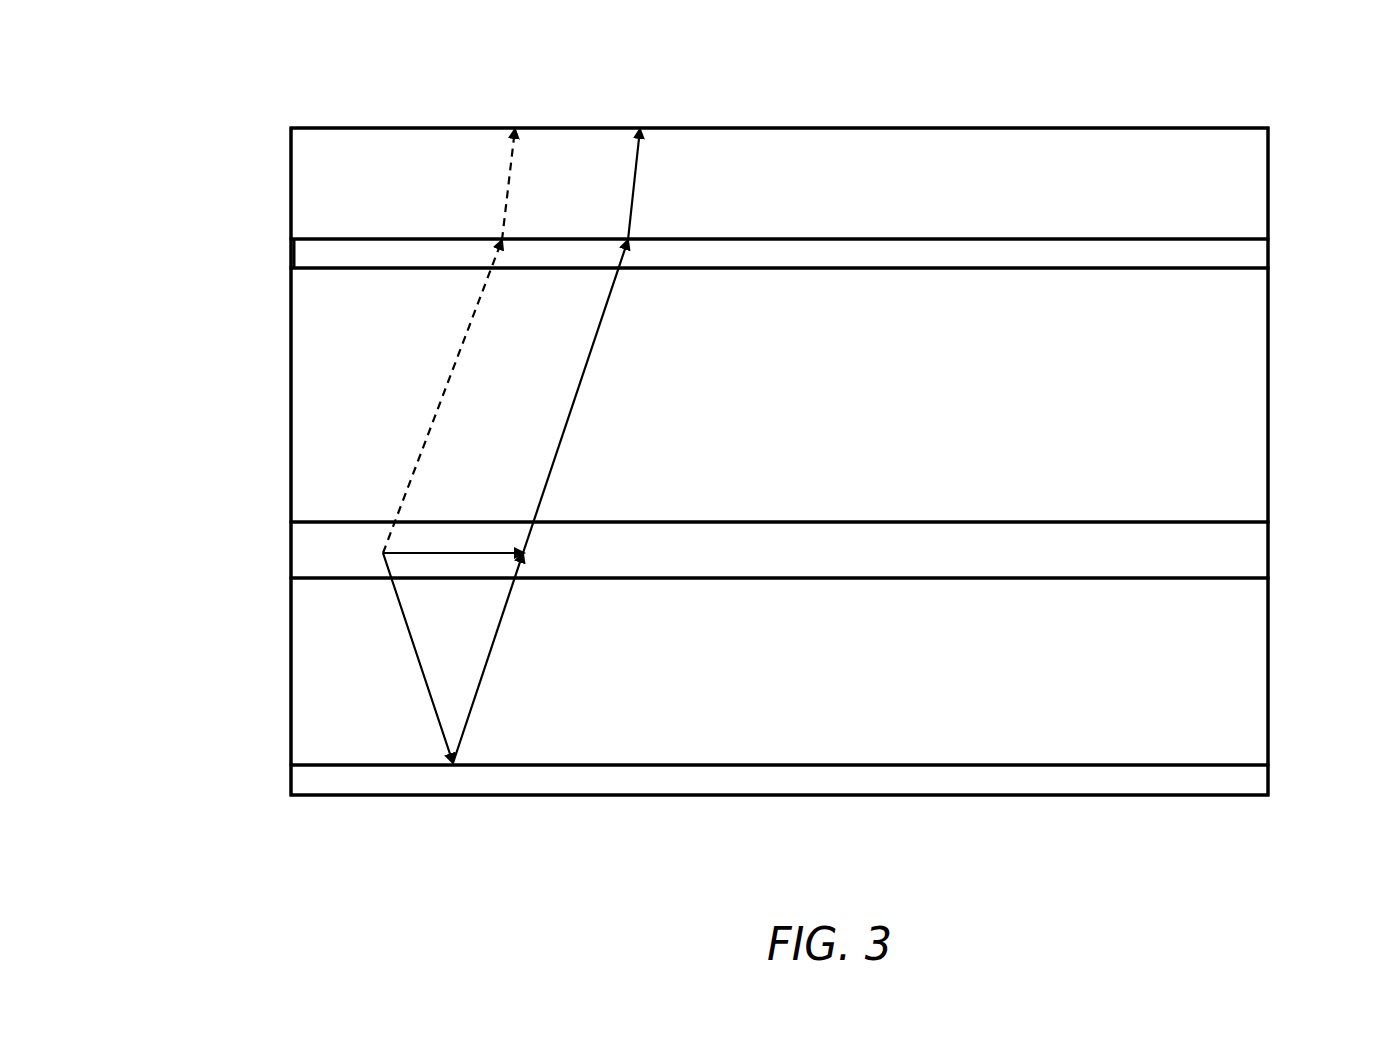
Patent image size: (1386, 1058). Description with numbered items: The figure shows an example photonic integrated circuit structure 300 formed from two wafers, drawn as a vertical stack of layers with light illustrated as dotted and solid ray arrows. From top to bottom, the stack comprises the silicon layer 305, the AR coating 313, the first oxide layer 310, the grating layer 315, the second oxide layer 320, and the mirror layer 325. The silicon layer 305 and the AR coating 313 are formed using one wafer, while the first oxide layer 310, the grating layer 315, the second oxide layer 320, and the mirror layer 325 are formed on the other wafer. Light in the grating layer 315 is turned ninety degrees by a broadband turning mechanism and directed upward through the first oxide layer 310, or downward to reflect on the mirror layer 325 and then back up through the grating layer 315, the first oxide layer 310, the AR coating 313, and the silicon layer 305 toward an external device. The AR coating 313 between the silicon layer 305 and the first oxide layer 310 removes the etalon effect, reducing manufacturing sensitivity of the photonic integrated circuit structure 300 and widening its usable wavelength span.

The photonic integrated circuit structure 300 is at (196, 112).
The silicon layer 305 is at (1255, 177).
The AR coating 313 is at (1258, 255).
The first oxide layer 310 is at (1255, 391).
The grating layer 315 is at (1255, 551).
The second oxide layer 320 is at (1257, 673).
The mirror layer 325 is at (1258, 785).